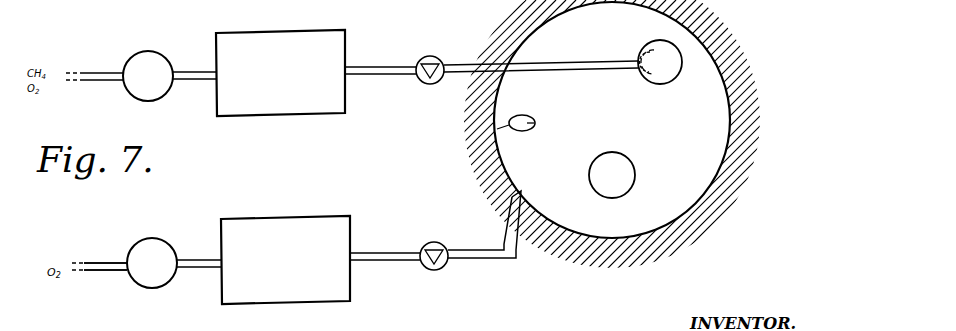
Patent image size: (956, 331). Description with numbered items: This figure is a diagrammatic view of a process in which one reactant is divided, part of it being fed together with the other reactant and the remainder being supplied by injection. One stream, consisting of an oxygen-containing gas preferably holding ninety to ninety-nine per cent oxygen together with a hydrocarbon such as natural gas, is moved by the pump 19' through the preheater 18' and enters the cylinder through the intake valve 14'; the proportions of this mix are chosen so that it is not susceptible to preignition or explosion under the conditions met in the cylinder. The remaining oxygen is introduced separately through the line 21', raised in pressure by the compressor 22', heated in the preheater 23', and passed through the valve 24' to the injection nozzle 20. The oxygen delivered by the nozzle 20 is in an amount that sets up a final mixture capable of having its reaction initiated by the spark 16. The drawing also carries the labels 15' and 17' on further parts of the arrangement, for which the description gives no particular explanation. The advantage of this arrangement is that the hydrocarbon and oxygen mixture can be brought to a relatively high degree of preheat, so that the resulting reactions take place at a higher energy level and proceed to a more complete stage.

The intake valve 14' is at (707, 57).
The element E (detonator/exhaust unit) 15' is at (589, 224).
The spark 16 is at (497, 129).
The valve 17' is at (422, 56).
The preheater 18' is at (280, 59).
The pump 19' is at (156, 59).
The injection nozzle 20 is at (517, 208).
The line 21' is at (102, 287).
The compressor 22' is at (152, 284).
The preheater 23' is at (285, 273).
The valve 24' is at (442, 271).